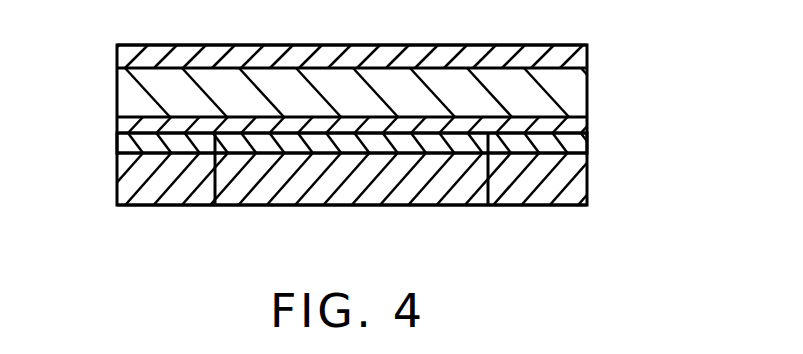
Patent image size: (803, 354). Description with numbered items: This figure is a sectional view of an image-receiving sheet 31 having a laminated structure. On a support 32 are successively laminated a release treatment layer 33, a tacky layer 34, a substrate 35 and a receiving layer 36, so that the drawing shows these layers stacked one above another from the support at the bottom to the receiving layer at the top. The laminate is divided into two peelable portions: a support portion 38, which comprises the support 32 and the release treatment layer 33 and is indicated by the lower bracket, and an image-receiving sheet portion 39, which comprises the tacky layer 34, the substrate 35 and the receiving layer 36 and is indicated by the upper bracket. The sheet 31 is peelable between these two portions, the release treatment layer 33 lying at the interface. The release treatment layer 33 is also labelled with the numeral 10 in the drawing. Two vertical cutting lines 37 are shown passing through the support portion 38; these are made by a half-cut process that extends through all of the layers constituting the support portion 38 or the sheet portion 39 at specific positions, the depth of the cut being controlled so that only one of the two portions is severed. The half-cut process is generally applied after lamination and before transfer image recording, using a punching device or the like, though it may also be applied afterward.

The image-receiving sheet 31 is at (105, 119).
The support 32 is at (585, 181).
The release treatment layer 33 is at (587, 147).
The underlayer 10 is at (416, 148).
The tacky layer 34 is at (587, 125).
The substrate 35 is at (580, 92).
The receiving layer 36 is at (590, 55).
The cutting lines 37 is at (216, 178).
The support portion 38 is at (717, 128).
The image-receiving sheet portion 39 is at (663, 20).